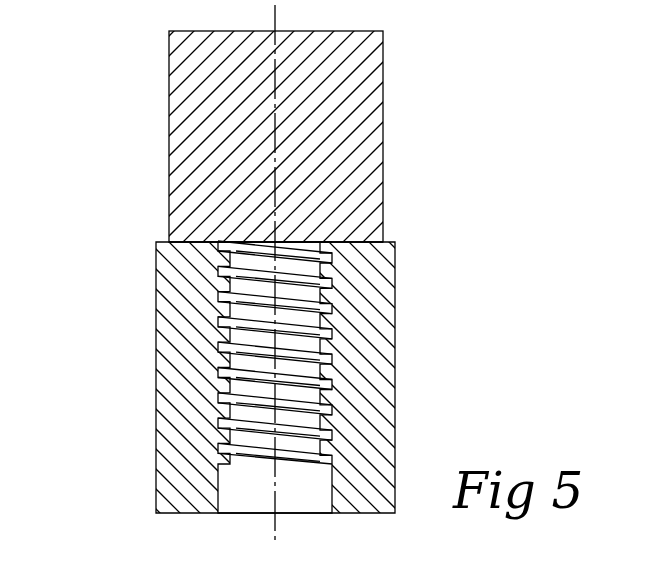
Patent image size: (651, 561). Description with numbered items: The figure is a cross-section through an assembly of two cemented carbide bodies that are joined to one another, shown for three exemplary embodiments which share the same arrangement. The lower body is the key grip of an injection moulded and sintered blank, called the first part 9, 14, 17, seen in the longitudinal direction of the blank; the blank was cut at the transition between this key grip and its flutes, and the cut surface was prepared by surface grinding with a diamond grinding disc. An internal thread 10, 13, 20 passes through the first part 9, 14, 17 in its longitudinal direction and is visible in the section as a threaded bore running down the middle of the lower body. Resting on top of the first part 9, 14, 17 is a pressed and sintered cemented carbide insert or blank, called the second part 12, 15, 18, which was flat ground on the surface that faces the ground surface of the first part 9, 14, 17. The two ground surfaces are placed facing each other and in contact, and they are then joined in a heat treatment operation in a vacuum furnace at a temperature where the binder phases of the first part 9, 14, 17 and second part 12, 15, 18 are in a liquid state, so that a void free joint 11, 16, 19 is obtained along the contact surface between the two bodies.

The first part 9 is at (325, 280).
The first part 14 is at (325, 280).
The first part 17 is at (378, 343).
The internal thread 10 is at (175, 352).
The internal thread 13 is at (175, 352).
The internal thread 20 is at (253, 297).
The void free joint 11 is at (356, 224).
The void free joint 16 is at (356, 224).
The void free joint 19 is at (357, 242).
The second part 12 is at (312, 280).
The second part 15 is at (312, 280).
The second part 18 is at (357, 105).